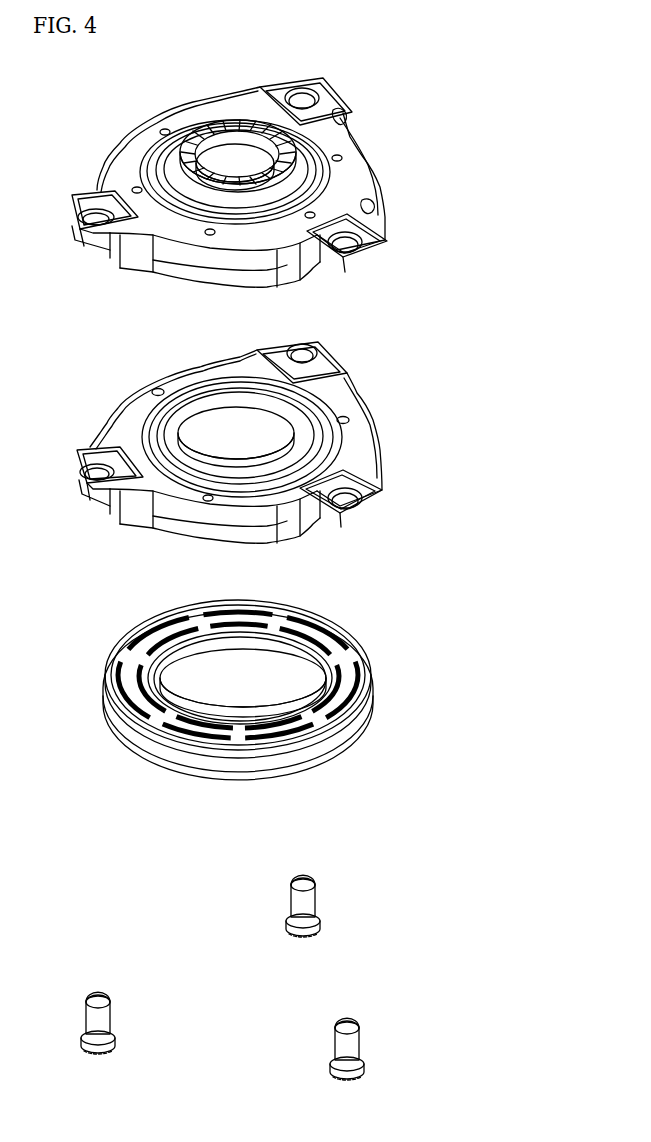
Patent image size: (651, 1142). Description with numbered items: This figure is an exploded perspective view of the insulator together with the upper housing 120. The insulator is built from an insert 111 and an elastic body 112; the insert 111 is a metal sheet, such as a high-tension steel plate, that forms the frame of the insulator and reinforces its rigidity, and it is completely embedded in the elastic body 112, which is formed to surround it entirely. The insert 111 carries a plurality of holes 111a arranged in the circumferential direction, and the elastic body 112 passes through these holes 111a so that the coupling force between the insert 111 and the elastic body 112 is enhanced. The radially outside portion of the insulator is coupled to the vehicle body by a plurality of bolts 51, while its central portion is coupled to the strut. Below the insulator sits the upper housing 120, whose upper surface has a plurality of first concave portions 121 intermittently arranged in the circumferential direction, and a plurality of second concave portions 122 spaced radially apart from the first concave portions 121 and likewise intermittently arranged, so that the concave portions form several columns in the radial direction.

The elastic body 112 is at (353, 175).
The insert 111 is at (271, 429).
The holes 111a is at (162, 390).
The upper housing 120 is at (296, 683).
The first concave portions 121 is at (350, 640).
The second concave portions 122 is at (323, 703).
The bolts 51 is at (347, 1017).